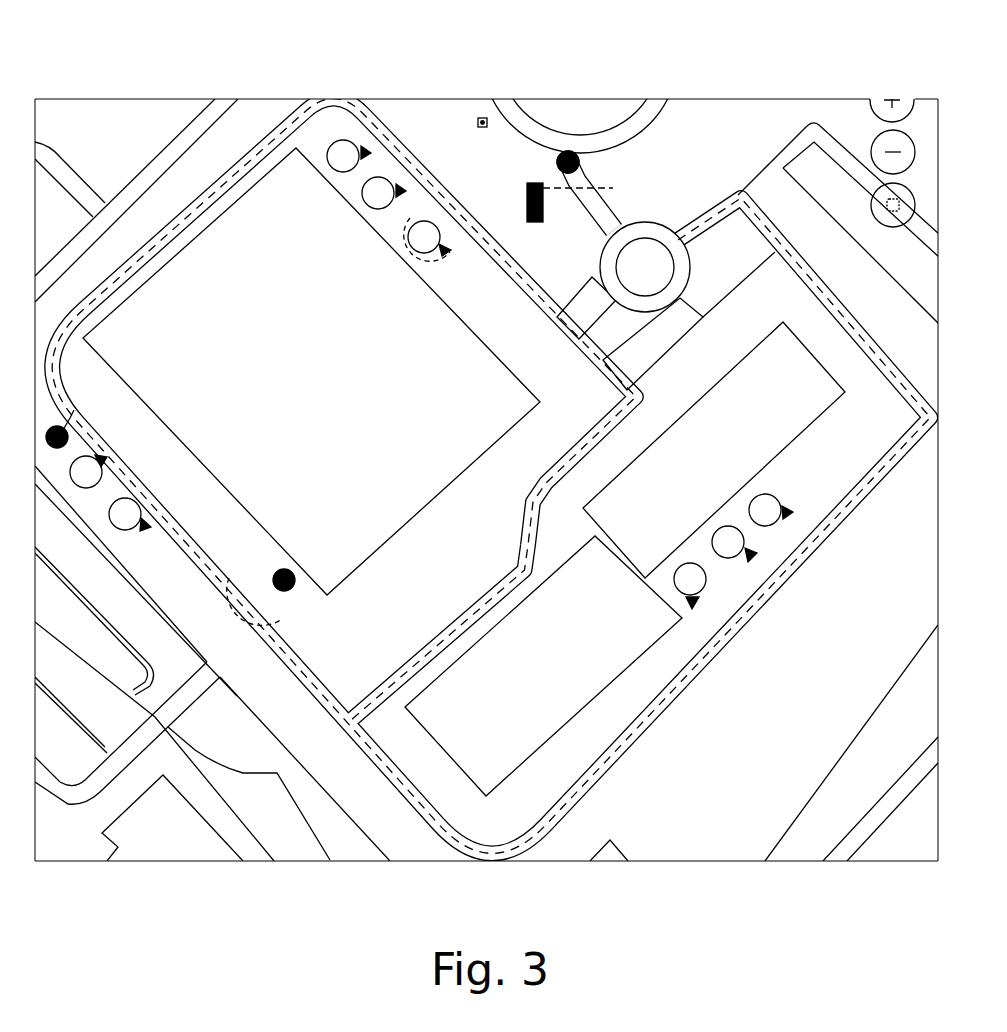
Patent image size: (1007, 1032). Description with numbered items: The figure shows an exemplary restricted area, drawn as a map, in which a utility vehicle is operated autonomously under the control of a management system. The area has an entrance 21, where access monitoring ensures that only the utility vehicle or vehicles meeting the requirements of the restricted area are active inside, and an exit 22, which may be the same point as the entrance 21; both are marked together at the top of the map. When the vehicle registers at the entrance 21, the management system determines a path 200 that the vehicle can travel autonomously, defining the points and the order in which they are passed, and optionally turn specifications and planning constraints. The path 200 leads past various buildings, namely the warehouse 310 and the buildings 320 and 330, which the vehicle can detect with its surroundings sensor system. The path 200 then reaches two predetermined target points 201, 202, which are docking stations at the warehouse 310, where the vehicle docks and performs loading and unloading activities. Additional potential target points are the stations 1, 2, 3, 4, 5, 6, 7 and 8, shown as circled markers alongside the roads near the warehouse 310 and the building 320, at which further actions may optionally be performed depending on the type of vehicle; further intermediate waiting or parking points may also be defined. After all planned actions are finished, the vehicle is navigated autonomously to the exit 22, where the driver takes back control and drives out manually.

The path 200 is at (732, 203).
The predetermined target point 201 is at (428, 225).
The predetermined target point 202 is at (335, 130).
The entrance 21 is at (569, 150).
The exit 22 is at (568, 162).
The warehouse 310 is at (309, 384).
The building 320 is at (699, 459).
The building 330 is at (522, 670).
The station 1 is at (429, 238).
The station 2 is at (130, 514).
The station 3 is at (384, 193).
The station 4 is at (349, 156).
The station 5 is at (76, 449).
The station 6 is at (690, 586).
The station 7 is at (734, 544).
The station 8 is at (771, 510).